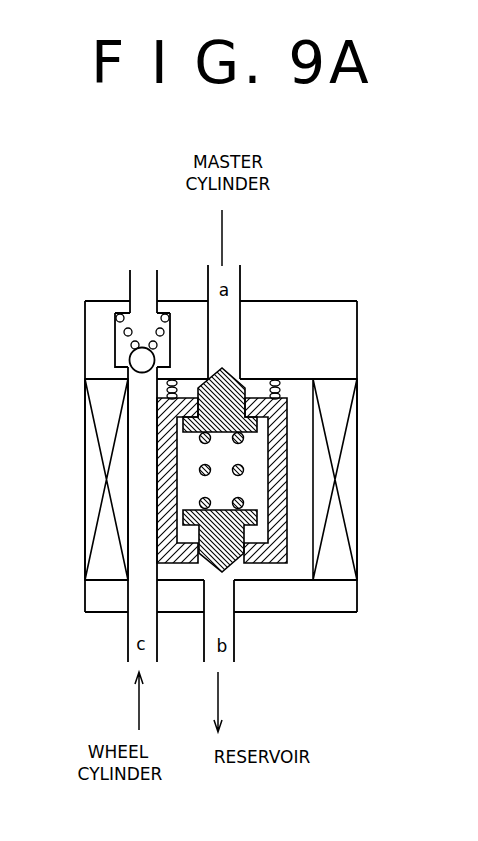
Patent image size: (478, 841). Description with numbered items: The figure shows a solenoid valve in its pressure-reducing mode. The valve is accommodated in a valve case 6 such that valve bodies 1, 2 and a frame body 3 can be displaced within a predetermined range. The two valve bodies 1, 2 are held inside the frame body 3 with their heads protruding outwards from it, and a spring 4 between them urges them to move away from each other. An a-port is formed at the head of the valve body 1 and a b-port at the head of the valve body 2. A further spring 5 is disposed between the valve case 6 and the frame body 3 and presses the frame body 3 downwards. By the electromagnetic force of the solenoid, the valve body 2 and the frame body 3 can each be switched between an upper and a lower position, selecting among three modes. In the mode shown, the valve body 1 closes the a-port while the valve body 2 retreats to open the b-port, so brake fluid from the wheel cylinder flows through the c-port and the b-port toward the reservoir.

The valve body 1 is at (238, 375).
The valve body 2 is at (228, 565).
The frame body 3 is at (288, 470).
The spring 4 is at (199, 470).
The spring 5 is at (167, 388).
The valve case 6 is at (358, 354).